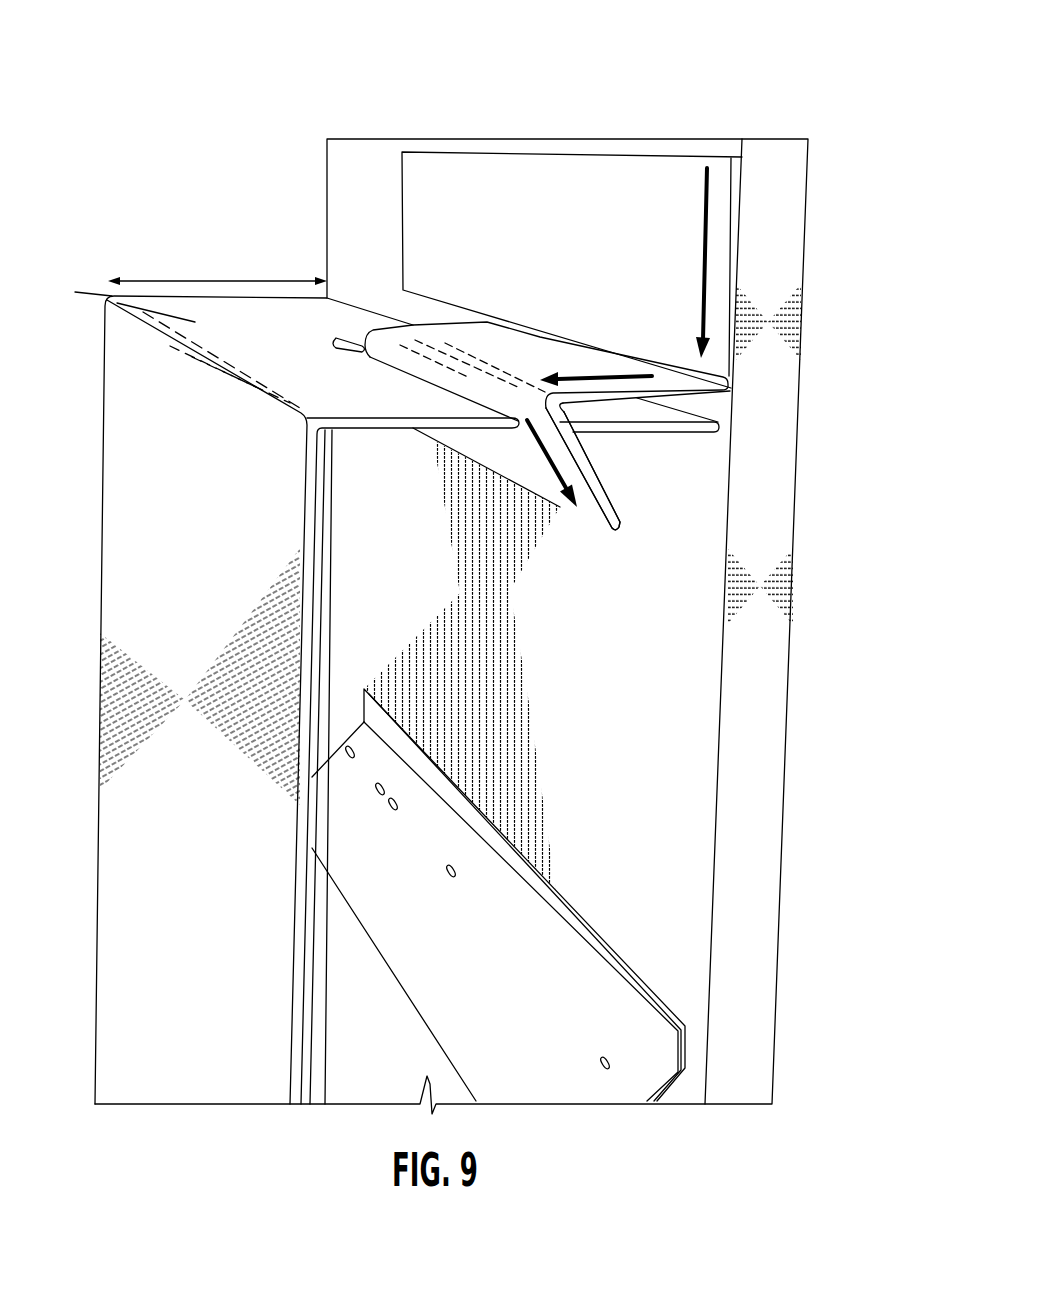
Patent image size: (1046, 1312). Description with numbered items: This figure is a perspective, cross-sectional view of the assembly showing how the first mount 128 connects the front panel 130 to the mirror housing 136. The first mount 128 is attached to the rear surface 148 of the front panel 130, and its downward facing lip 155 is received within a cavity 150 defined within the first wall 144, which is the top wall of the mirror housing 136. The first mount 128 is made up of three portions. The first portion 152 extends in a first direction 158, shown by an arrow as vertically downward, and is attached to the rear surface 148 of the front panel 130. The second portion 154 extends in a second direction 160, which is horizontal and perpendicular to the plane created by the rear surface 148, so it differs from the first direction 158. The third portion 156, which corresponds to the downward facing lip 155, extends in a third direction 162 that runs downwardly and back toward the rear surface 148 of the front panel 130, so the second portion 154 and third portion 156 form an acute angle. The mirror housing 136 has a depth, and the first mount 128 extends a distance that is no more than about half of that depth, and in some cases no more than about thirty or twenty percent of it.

The first mount 128 is at (805, 109).
The front panel 130 is at (792, 806).
The mirror housing 136 is at (97, 573).
The first wall 144 is at (184, 331).
The rear surface 148 is at (700, 919).
The cavity 150 is at (346, 341).
The first portion 152 is at (740, 209).
The second portion 154 is at (688, 390).
The downward facing lip 155 is at (612, 507).
The third portion 156 is at (612, 507).
The first direction 158 is at (700, 217).
The second direction 160 is at (607, 374).
The third direction 162 is at (552, 495).